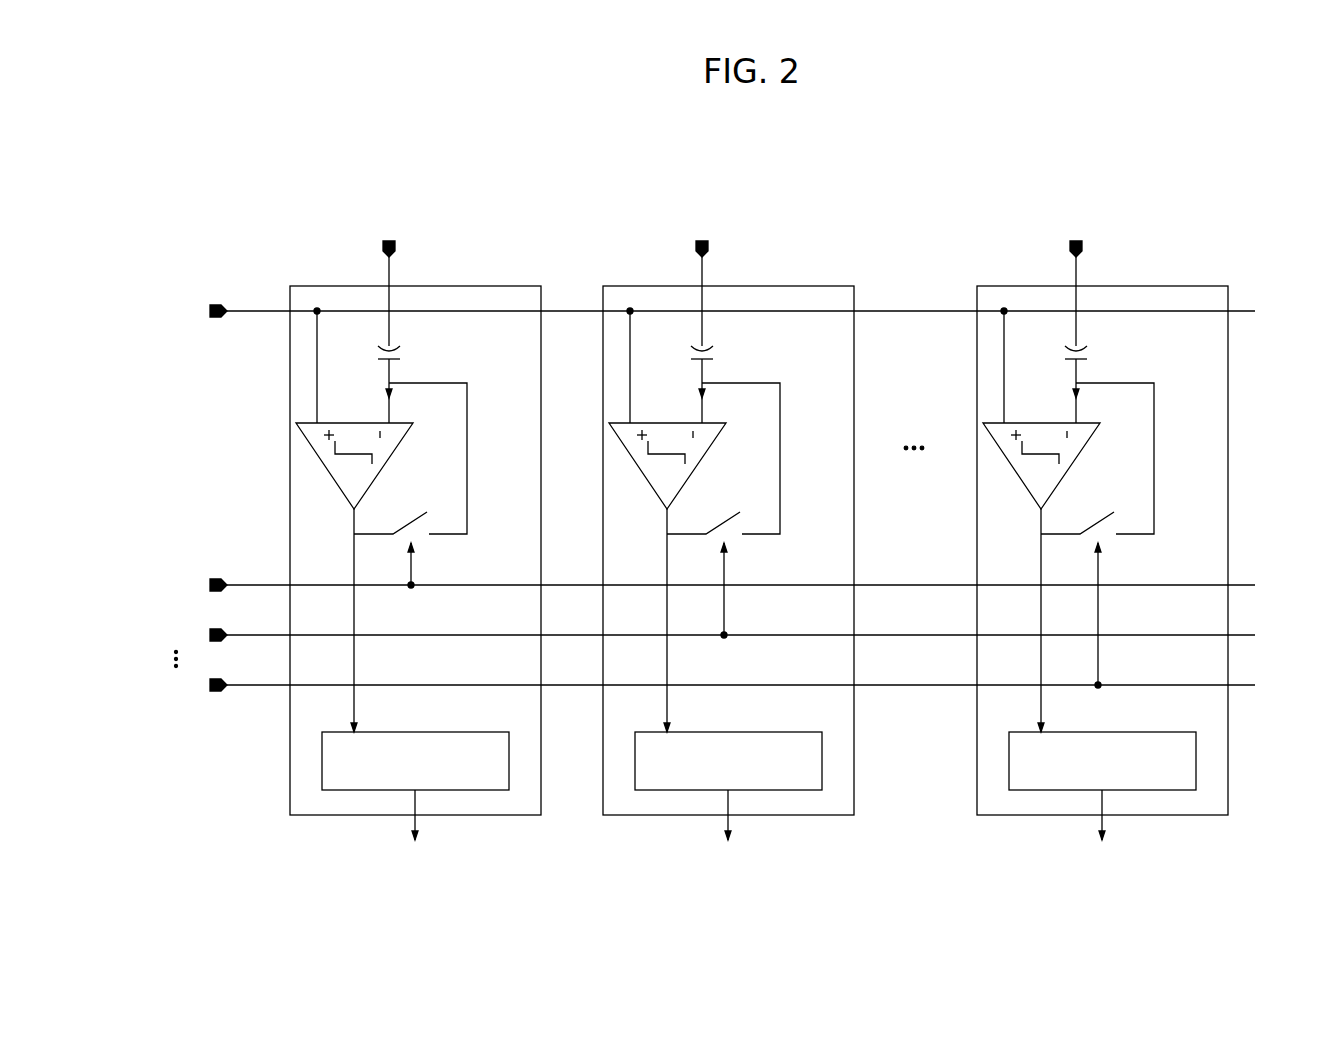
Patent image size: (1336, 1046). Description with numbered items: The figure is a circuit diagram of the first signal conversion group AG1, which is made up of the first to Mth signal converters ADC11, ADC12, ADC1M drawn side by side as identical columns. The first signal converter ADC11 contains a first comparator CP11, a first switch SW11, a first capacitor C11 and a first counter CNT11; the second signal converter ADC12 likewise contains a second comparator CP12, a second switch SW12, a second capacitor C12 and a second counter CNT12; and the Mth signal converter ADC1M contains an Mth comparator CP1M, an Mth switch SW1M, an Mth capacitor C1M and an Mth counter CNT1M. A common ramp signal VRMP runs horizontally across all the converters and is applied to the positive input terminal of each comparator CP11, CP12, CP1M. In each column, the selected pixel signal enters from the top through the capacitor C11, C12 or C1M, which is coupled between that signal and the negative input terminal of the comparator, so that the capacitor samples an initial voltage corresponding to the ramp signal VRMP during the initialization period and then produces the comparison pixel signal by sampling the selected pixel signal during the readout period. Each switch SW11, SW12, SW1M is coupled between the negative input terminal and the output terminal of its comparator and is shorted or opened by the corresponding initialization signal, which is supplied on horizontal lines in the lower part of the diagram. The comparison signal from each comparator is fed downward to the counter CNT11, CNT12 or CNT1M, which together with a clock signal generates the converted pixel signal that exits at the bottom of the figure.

The first signal conversion group AG1 is at (267, 208).
The first signal converter ADC11 is at (467, 287).
The second signal converter ADC12 is at (780, 287).
The Mth signal converter ADC1M is at (1154, 287).
The first capacitor C11 is at (410, 355).
The second capacitor C12 is at (723, 355).
The Mth capacitor C1M is at (1097, 355).
The first comparator CP11 is at (325, 468).
The second comparator CP12 is at (638, 468).
The Mth comparator CP1M is at (1012, 468).
The first switch SW11 is at (410, 485).
The second switch SW12 is at (723, 510).
The Mth switch SW1M is at (1097, 535).
The first counter CNT11 is at (415, 761).
The second counter CNT12 is at (728, 761).
The Mth counter CNT1M is at (1102, 761).
The ramp signal VRMP is at (707, 311).